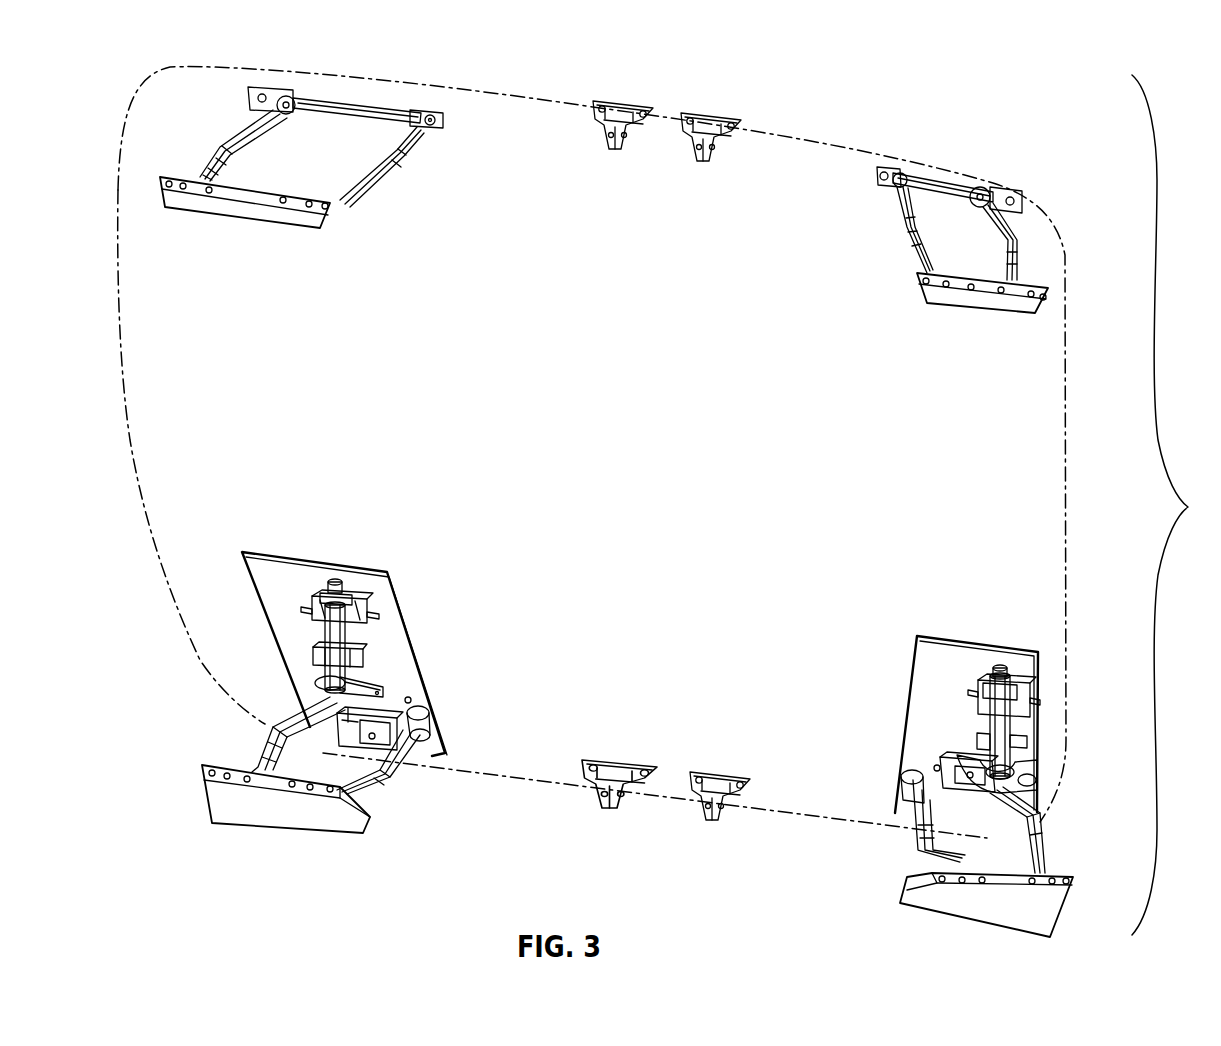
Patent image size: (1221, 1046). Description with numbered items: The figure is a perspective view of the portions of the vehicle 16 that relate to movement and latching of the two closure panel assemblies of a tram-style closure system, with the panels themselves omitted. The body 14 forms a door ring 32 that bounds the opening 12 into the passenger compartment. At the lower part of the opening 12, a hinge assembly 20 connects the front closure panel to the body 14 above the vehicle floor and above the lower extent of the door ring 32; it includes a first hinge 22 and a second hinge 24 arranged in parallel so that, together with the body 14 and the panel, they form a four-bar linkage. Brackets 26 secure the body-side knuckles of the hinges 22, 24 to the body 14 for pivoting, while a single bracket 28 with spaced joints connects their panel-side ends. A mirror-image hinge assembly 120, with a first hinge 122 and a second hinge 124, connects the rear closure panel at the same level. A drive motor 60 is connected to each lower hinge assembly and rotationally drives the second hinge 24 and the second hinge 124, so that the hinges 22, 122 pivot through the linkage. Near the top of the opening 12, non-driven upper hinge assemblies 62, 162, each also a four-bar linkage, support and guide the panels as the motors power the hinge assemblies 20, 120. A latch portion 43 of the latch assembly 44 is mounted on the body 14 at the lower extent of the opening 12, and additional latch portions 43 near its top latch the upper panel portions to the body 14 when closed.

The opening 12 is at (205, 488).
The body 14 is at (124, 372).
The vehicle 16 is at (1176, 505).
The hinge assembly 20 is at (960, 848).
The first hinge 22 is at (915, 838).
The second hinge 24 is at (1038, 850).
The brackets 26 is at (335, 681).
The bracket 28 is at (253, 812).
The door ring 32 is at (530, 786).
The second latch portion 43 is at (621, 103).
The latch assembly 44 is at (624, 760).
The drive motor 60 is at (296, 632).
The upper hinge assembly 62 is at (888, 228).
The hinge assembly 120 is at (324, 790).
The first hinge 122 is at (407, 777).
The second hinge 124 is at (257, 750).
The upper hinge assembly 162 is at (400, 171).